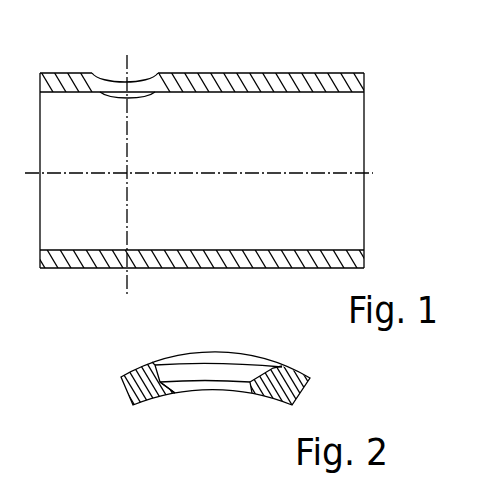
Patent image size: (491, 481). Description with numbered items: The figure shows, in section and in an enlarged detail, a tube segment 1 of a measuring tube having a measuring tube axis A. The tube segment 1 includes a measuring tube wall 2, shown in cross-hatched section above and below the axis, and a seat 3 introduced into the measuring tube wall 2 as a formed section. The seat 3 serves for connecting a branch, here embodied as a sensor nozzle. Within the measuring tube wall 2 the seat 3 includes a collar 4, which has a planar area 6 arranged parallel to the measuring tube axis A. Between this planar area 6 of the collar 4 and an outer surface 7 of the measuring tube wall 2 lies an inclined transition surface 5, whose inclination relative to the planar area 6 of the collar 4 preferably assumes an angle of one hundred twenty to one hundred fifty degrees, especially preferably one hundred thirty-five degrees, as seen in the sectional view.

In FIG. 1, the tube segment 1 is at (338, 69).
In FIG. 1, the measuring tube wall 2 is at (285, 82).
In FIG. 1, the seat 3 is at (148, 82).
In FIG. 2, the collar 4 is at (165, 395).
In FIG. 2, the inclined transition surface 5 is at (158, 380).
In FIG. 2, the planar area 6 is at (166, 383).
In FIG. 2, the outer surface 7 is at (140, 376).